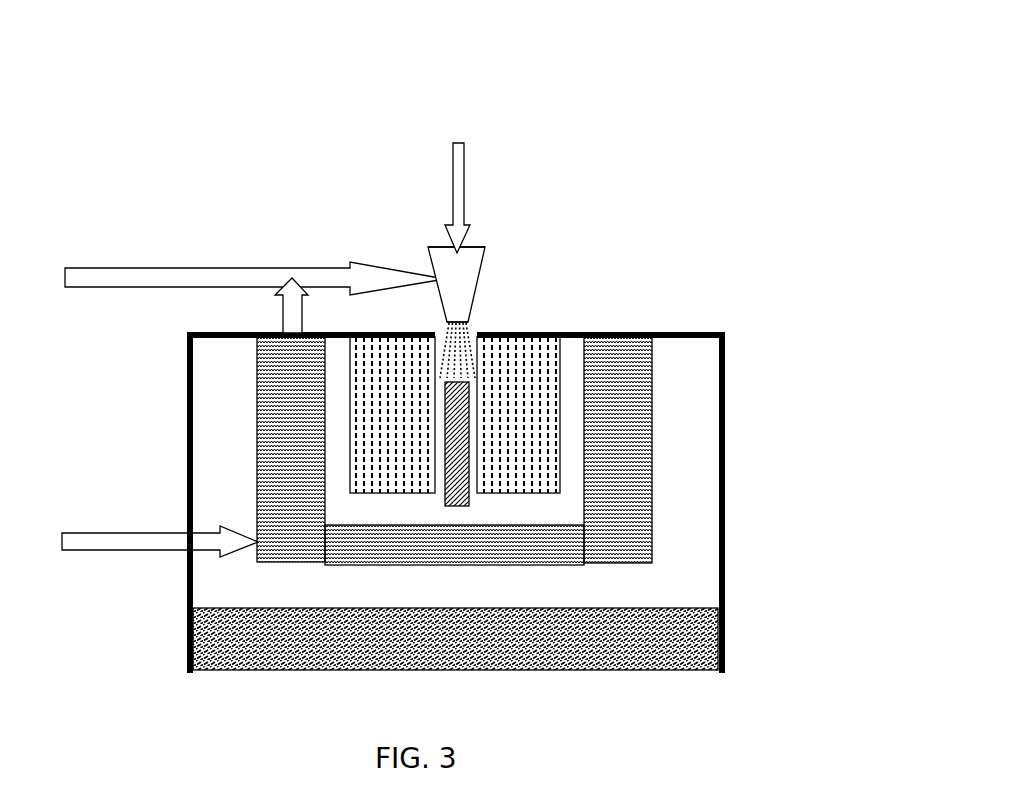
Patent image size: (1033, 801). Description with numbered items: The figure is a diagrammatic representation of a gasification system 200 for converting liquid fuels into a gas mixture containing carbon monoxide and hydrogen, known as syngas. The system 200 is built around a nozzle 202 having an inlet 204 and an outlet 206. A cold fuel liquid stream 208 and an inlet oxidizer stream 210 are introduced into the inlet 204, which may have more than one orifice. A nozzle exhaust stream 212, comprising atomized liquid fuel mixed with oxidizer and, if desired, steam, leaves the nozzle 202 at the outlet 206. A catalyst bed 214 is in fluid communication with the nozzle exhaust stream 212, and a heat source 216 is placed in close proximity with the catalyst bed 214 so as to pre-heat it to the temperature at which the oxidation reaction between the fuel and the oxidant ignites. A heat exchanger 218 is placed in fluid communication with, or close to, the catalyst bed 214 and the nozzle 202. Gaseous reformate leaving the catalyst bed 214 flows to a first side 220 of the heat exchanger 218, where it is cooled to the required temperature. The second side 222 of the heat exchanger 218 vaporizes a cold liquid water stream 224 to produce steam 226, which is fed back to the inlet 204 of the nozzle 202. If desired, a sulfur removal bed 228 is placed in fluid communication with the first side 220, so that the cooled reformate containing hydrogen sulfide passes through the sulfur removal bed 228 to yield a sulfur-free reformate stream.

The gasification system 200 is at (784, 40).
The nozzle 202 is at (463, 278).
The inlet 204 is at (472, 246).
The outlet 206 is at (463, 323).
The cold fuel liquid stream 208 is at (456, 195).
The inlet oxidizer stream 210 is at (99, 277).
The nozzle exhaust stream 212 is at (453, 350).
The catalyst bed 214 is at (512, 378).
The heat source 216 is at (453, 467).
The heat exchanger 218 is at (620, 468).
The first side 220 is at (533, 443).
The second side 222 is at (258, 455).
The cold liquid water stream 224 is at (97, 541).
The steam 226 is at (293, 325).
The sulfur removal bed 228 is at (636, 633).